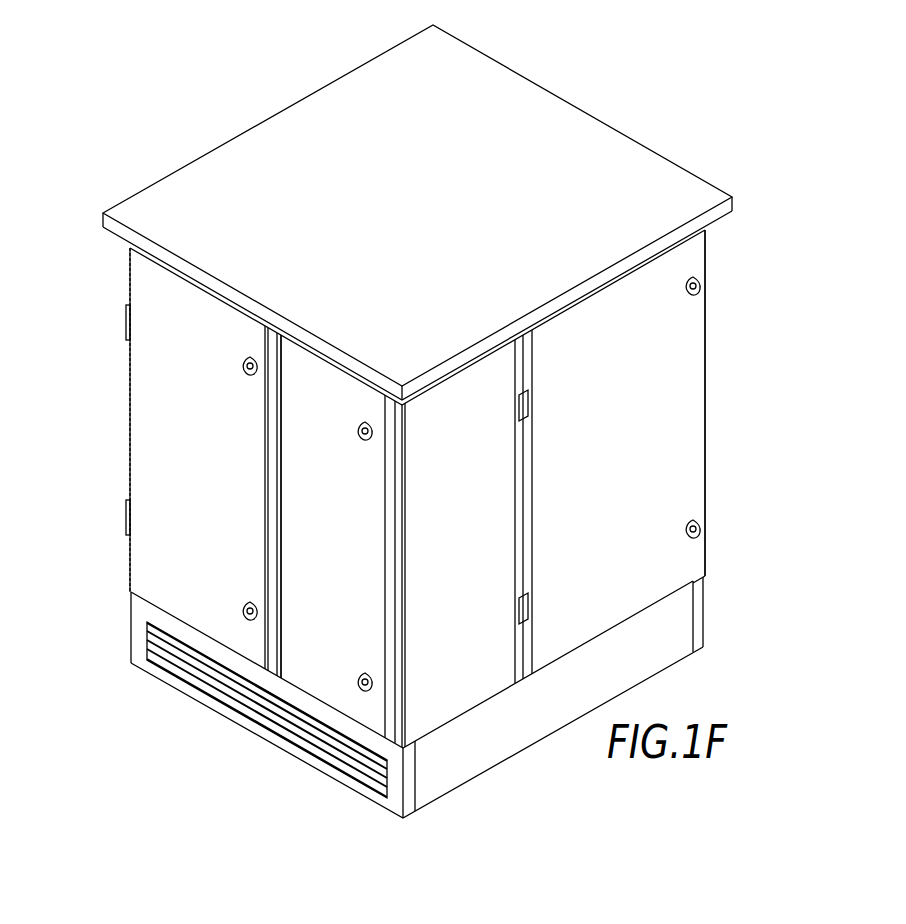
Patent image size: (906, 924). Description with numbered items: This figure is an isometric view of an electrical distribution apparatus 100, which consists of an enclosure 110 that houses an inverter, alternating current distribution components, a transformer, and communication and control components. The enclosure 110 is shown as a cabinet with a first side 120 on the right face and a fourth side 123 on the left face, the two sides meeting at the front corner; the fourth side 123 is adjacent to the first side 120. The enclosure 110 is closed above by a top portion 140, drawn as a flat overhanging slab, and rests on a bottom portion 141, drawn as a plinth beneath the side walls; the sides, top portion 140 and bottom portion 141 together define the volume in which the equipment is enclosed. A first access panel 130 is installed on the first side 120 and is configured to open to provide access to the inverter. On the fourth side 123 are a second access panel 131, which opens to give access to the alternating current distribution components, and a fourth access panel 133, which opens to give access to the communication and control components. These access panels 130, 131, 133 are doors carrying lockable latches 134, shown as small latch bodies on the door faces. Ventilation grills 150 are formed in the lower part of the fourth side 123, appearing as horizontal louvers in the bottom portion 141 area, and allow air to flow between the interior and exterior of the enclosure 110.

The electrical distribution apparatus 100 is at (165, 127).
The enclosure 110 is at (736, 170).
The first side 120 is at (447, 700).
The fourth side 123 is at (268, 325).
The first access panel 130 is at (683, 410).
The second access panel 131 is at (150, 378).
The fourth access panel 133 is at (358, 512).
The lockable latches 134 is at (688, 290).
The top portion 140 is at (560, 97).
The bottom portion 141 is at (668, 662).
The ventilation grills 150 is at (162, 658).